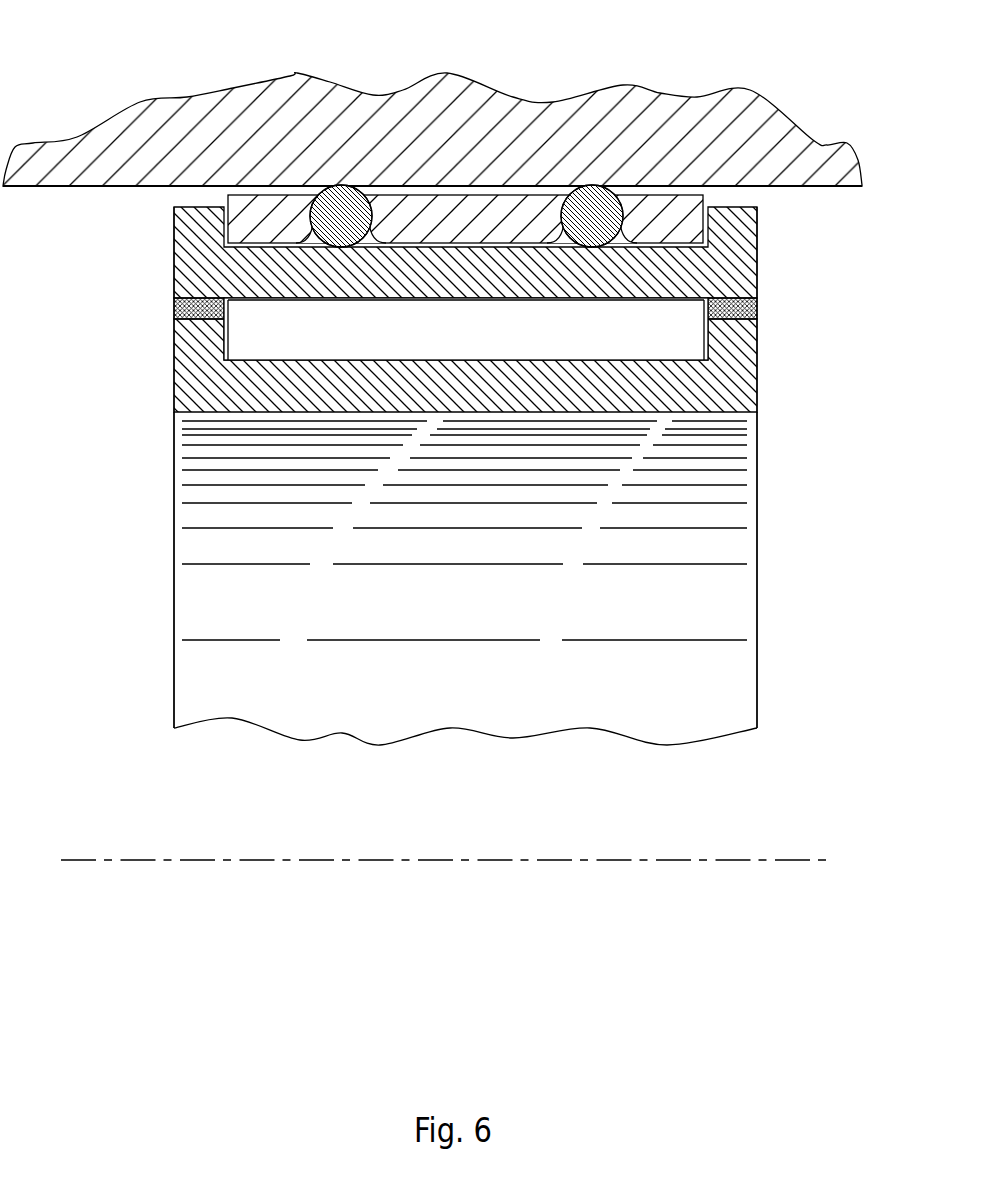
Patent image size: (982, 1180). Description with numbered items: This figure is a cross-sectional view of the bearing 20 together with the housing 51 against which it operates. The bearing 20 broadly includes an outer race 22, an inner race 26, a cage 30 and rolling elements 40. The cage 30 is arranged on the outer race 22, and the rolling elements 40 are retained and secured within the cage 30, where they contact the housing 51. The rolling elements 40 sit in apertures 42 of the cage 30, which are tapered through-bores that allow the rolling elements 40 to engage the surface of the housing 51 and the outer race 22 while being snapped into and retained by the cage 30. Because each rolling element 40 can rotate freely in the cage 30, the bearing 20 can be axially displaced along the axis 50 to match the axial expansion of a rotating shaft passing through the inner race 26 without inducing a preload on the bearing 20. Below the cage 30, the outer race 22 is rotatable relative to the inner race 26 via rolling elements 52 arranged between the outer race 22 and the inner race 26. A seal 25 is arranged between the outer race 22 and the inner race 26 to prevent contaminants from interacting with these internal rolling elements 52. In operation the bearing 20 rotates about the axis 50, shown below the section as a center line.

The bearing 20 is at (783, 303).
The outer race 22 is at (173, 252).
The seal 25 is at (173, 310).
The inner race 26 is at (173, 385).
The cage 30 is at (228, 198).
The rolling elements 40 is at (352, 229).
The apertures 42 is at (633, 218).
The axis 50 is at (83, 859).
The housing 51 is at (212, 72).
The rolling elements 52 is at (463, 339).